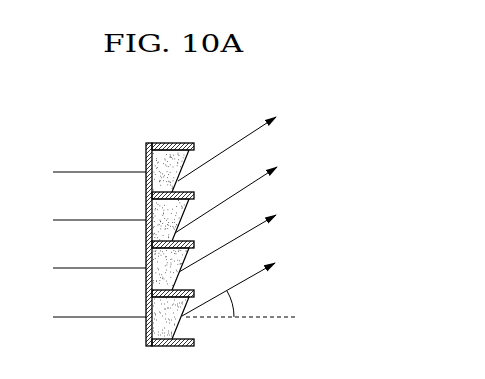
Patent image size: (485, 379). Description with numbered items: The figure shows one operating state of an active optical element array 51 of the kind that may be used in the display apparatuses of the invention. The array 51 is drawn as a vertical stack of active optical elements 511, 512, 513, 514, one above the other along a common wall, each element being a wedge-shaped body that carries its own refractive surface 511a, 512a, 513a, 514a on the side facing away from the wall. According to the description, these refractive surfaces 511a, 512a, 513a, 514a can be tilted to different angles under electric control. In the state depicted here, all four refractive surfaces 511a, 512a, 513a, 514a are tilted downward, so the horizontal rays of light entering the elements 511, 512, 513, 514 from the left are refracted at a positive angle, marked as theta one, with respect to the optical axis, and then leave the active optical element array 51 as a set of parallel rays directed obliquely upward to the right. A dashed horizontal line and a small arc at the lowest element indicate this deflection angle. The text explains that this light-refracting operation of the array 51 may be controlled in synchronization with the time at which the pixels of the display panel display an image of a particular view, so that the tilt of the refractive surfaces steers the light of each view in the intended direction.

The active optical element array 51 is at (178, 140).
The active optical element 511 is at (150, 163).
The active optical element 512 is at (150, 211).
The active optical element 513 is at (150, 259).
The active optical element 514 is at (150, 308).
The refractive surface 511a is at (184, 181).
The refractive surface 512a is at (181, 231).
The refractive surface 513a is at (183, 277).
The refractive surface 514a is at (180, 334).